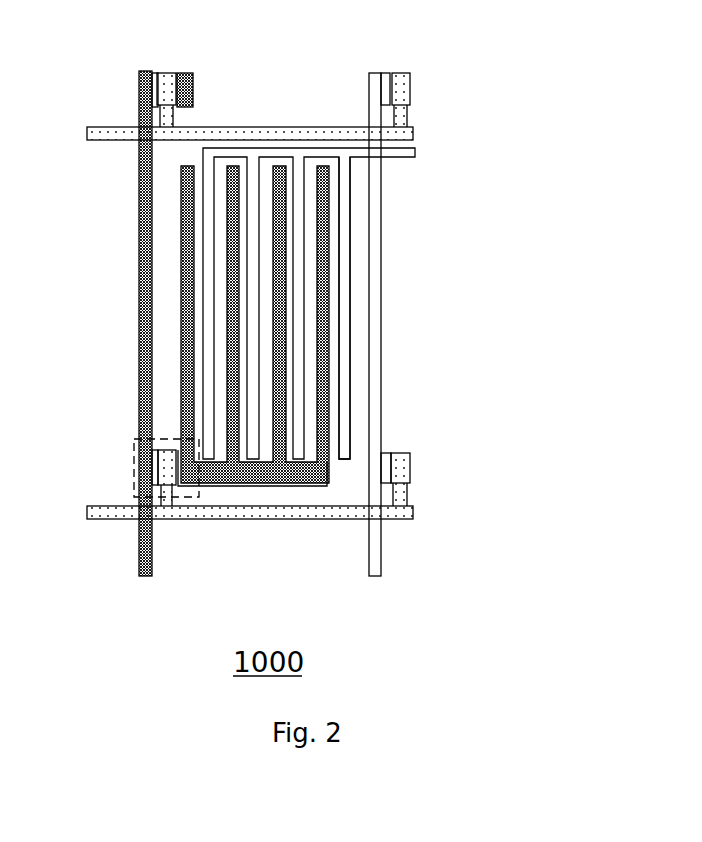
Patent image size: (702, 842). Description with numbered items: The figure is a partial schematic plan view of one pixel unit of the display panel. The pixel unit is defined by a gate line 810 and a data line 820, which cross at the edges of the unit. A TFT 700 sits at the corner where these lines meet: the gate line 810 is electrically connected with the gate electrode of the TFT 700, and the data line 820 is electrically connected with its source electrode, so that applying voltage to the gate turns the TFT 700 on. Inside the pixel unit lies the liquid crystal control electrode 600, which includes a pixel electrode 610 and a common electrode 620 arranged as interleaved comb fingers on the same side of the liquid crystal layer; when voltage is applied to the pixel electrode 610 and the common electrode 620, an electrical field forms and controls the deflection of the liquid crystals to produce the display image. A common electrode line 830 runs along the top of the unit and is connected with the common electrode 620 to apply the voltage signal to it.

The liquid crystal control electrode 600 is at (375, 320).
The pixel electrode 610 is at (322, 378).
The common electrode 620 is at (345, 278).
The TFT 700 is at (167, 437).
The gate line 810 is at (205, 508).
The data line 820 is at (150, 327).
The common electrode line 830 is at (390, 157).